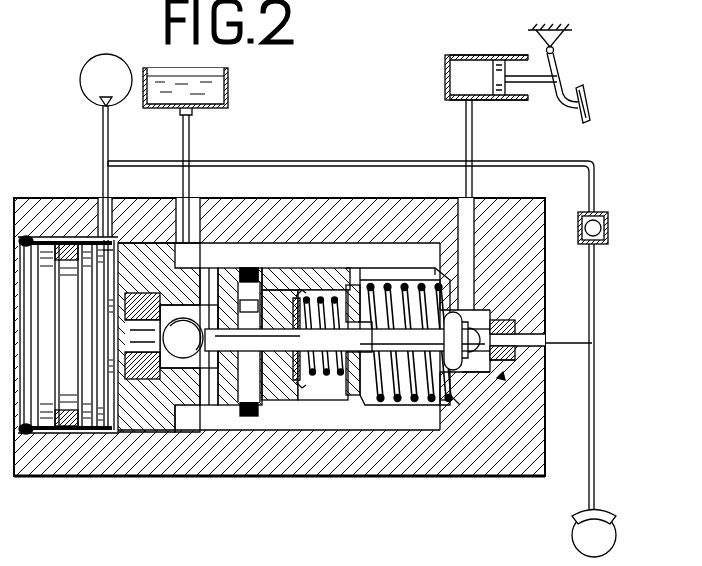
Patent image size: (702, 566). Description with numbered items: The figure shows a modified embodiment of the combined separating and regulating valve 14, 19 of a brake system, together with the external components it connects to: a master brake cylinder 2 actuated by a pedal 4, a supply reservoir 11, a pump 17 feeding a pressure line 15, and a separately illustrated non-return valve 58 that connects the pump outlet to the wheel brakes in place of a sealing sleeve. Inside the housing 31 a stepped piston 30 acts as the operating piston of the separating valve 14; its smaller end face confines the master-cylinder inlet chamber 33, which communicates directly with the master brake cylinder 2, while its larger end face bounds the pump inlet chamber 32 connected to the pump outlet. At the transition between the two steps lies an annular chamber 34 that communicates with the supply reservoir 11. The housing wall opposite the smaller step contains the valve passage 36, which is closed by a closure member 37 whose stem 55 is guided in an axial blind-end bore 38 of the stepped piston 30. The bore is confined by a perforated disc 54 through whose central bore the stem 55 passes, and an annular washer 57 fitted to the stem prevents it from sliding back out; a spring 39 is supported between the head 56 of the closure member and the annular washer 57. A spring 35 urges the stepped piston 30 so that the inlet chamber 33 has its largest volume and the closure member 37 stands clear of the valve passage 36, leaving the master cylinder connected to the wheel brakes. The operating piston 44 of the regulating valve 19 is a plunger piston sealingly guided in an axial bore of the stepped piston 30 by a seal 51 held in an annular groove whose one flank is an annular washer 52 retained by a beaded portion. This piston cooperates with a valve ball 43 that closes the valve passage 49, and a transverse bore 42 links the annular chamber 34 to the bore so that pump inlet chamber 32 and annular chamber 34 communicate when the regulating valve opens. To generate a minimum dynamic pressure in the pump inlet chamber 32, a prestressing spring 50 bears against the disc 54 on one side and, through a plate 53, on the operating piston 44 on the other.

The master brake cylinder 2 is at (504, 100).
The pedal 4 is at (556, 104).
The supply reservoir 11 is at (228, 85).
The separating valve 14 is at (492, 380).
The pressure line 15 is at (362, 161).
The pump 17 is at (85, 80).
The regulating valve 19 is at (182, 348).
The stepped piston 30 is at (293, 405).
The housing 31 is at (492, 462).
The pump inlet chamber 32 is at (108, 250).
The master-cylinder inlet chamber 33 is at (420, 412).
The annular chamber 34 is at (210, 420).
The spring 35 is at (392, 285).
The valve passage 36 is at (500, 332).
The closure member 37 is at (512, 412).
The blind-end bore 38 is at (318, 395).
The spring 39 is at (405, 412).
The transverse bore 42 is at (190, 245).
The valve ball 43 is at (190, 418).
The operating piston 44 is at (248, 418).
The valve passage 49 is at (116, 395).
The prestressing spring 50 is at (322, 300).
The seal 51 is at (262, 410).
The annular washer 52 is at (264, 268).
The plate 53 is at (278, 282).
The perforated disc 54 is at (365, 405).
The stem 55 is at (466, 440).
The head 56 is at (512, 356).
The annular washer 57 is at (350, 400).
The non-return valve 58 is at (608, 232).